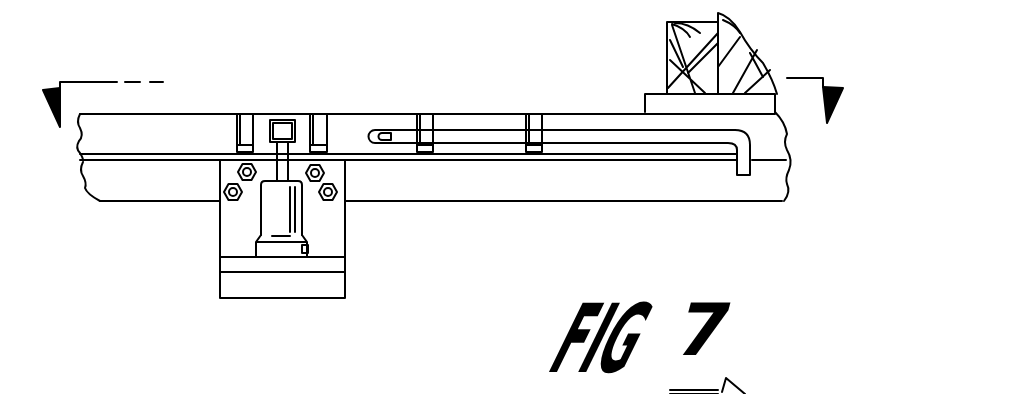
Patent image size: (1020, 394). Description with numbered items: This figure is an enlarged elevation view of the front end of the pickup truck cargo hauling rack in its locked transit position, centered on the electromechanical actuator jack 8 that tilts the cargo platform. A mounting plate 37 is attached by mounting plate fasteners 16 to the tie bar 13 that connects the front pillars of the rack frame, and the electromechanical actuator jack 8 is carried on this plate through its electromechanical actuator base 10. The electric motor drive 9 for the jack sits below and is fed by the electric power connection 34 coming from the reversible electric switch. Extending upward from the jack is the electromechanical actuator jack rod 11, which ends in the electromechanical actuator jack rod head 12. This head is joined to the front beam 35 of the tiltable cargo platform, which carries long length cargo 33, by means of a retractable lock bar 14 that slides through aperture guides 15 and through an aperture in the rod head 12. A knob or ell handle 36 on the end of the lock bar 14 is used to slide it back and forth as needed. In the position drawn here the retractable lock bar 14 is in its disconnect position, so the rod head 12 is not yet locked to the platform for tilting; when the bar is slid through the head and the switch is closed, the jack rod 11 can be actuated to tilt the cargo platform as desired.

The electromechanical actuator jack 8 is at (268, 216).
The electric motor drive 9 is at (272, 252).
The electromechanical actuator base 10 is at (254, 313).
The electromechanical actuator jack rod 11 is at (282, 150).
The electromechanical actuator jack rod head 12 is at (277, 123).
The tie bar 13 is at (107, 193).
The retractable lock bar 14 is at (617, 133).
The aperture guides 15 is at (248, 118).
The mounting plate fasteners 16 is at (237, 172).
The long length cargo 33 is at (667, 23).
The electric power connection 34 is at (308, 243).
The front beam of cargo tilt rack 35 is at (157, 133).
The knob or ell handle 36 is at (786, 184).
The mounting plate 37 is at (231, 243).